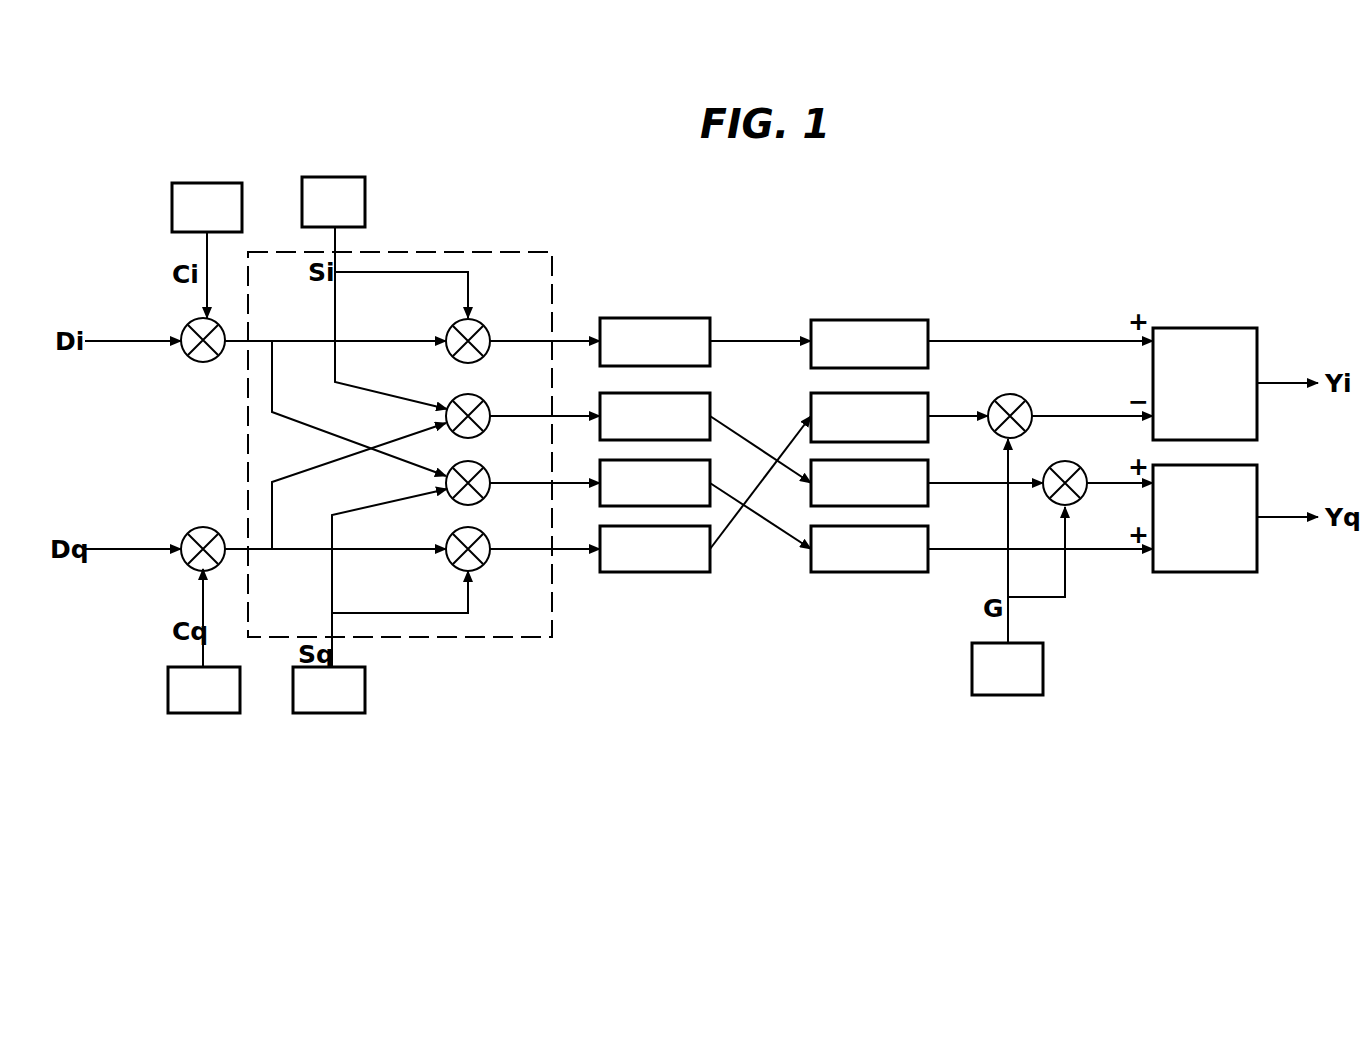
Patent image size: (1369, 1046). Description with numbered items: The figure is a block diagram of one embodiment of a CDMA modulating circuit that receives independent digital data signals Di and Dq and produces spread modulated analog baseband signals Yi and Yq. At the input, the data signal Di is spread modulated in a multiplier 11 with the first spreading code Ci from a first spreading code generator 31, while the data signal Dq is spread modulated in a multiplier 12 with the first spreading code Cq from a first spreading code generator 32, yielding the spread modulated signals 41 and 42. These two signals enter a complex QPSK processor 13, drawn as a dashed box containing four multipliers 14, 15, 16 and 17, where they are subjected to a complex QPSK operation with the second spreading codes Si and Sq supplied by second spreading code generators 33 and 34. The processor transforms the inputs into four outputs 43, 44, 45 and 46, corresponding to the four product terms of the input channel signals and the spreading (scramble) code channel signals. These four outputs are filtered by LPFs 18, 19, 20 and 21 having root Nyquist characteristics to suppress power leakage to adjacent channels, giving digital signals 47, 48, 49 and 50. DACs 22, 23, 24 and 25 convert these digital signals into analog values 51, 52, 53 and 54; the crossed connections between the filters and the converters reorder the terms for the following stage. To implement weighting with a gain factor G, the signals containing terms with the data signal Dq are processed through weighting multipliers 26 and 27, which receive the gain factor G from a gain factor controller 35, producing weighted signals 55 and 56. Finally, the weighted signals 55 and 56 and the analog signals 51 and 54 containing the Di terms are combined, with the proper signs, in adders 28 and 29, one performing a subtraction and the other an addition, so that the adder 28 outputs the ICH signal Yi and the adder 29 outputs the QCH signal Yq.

The multiplier 11 is at (193, 357).
The multiplier 12 is at (192, 532).
The complex QPSK processor 13 is at (510, 252).
The multiplier 14 is at (483, 325).
The multiplier 15 is at (483, 402).
The multiplier 16 is at (483, 471).
The multiplier 17 is at (483, 536).
The LPF 18 is at (656, 318).
The LPF 19 is at (698, 393).
The LPF 20 is at (698, 460).
The LPF 21 is at (655, 572).
The DAC 22 is at (870, 320).
The DAC 23 is at (916, 393).
The DAC 24 is at (916, 460).
The DAC 25 is at (870, 572).
The weighting multiplier 26 is at (1023, 402).
The weighting multiplier 27 is at (1079, 469).
The adder 28 is at (1207, 328).
The adder 29 is at (1205, 572).
The first spreading code generator 31 is at (218, 183).
The first spreading code generator 32 is at (203, 713).
The second spreading code generator 33 is at (333, 177).
The second spreading code generator 34 is at (322, 713).
The gain factor controller 35 is at (1013, 695).
The spread modulated signal 41 is at (268, 340).
The spread modulated signal 42 is at (260, 551).
The output 43 is at (573, 341).
The output 44 is at (573, 416).
The output 45 is at (573, 482).
The output 46 is at (573, 549).
The digital signal 47 is at (768, 341).
The digital signal 48 is at (766, 444).
The digital signal 49 is at (780, 526).
The digital signal 50 is at (732, 528).
The analog value 51 is at (1094, 338).
The analog value 52 is at (978, 415).
The analog value 53 is at (983, 483).
The analog value 54 is at (976, 549).
The weighted signal 55 is at (1104, 416).
The weighted signal 56 is at (1098, 486).